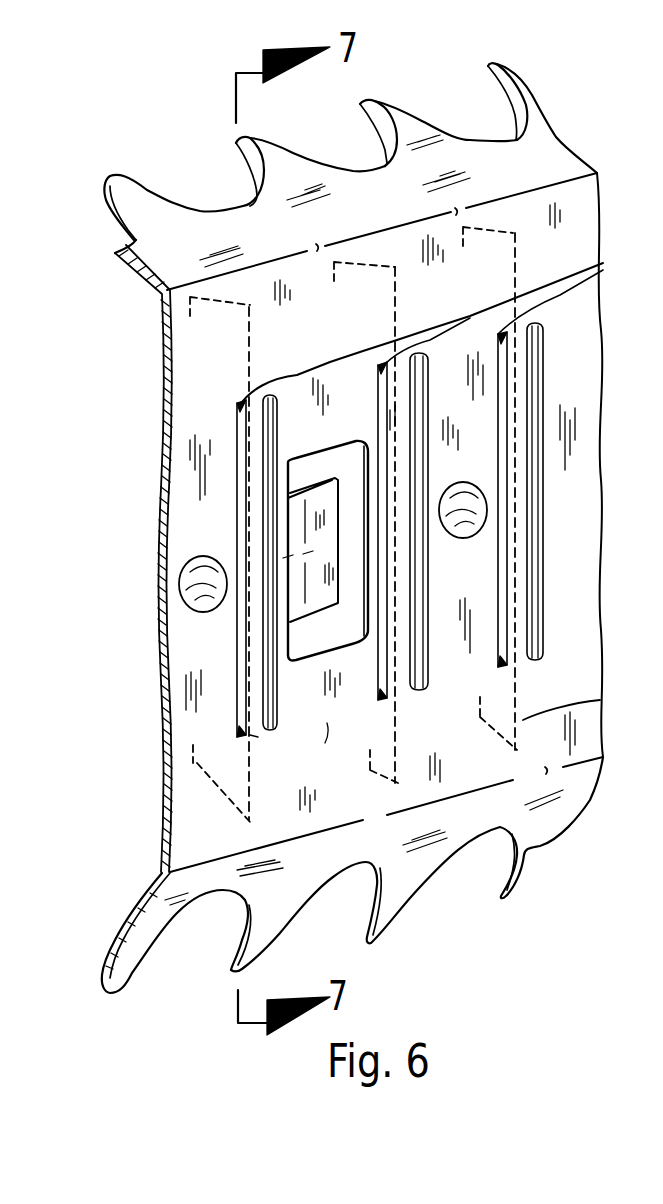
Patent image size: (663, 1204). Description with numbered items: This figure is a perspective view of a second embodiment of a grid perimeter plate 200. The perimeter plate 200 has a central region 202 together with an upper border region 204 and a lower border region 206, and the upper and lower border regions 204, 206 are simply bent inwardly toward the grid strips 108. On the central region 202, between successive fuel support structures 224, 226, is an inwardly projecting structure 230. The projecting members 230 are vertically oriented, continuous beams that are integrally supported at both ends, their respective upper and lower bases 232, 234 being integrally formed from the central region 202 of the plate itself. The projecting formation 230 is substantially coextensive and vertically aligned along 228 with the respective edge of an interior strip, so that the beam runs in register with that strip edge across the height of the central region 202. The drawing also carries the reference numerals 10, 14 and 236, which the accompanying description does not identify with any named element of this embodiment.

The assembly 10 is at (137, 448).
The fin 14 is at (513, 570).
The grid strips 108 is at (662, 470).
The perimeter plate 200 is at (185, 195).
The central region 202 is at (477, 417).
The upper border region 204 is at (552, 140).
The lower border region 206 is at (187, 918).
The fuel support structure 224 is at (313, 573).
The fuel support structure 226 is at (183, 587).
The vertical alignment line 228 is at (600, 700).
The inwardly projecting structure 230 is at (250, 500).
The upper base 232 is at (600, 270).
The lower base 234 is at (250, 703).
The strip edge 236 is at (650, 292).